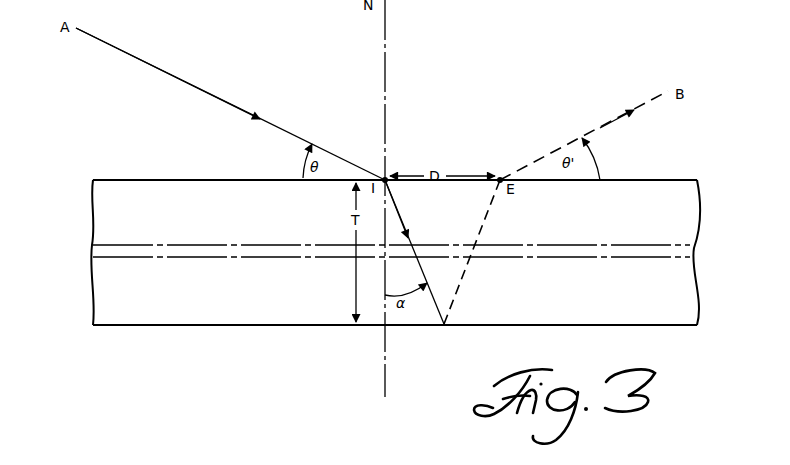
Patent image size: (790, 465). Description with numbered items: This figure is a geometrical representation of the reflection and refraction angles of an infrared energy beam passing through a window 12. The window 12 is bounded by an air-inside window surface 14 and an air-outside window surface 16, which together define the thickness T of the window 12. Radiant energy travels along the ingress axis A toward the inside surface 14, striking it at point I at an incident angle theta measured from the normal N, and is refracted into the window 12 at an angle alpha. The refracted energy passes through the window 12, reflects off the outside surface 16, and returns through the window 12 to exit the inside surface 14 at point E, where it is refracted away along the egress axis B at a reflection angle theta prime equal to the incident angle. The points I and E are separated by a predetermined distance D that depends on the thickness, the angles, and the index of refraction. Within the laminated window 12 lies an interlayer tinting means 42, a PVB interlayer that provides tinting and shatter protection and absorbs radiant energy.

The window 12 is at (173, 308).
The air-inside window surface 14 is at (138, 179).
The air-outside window surface 16 is at (287, 325).
The interlayer tinting means 42 is at (106, 249).